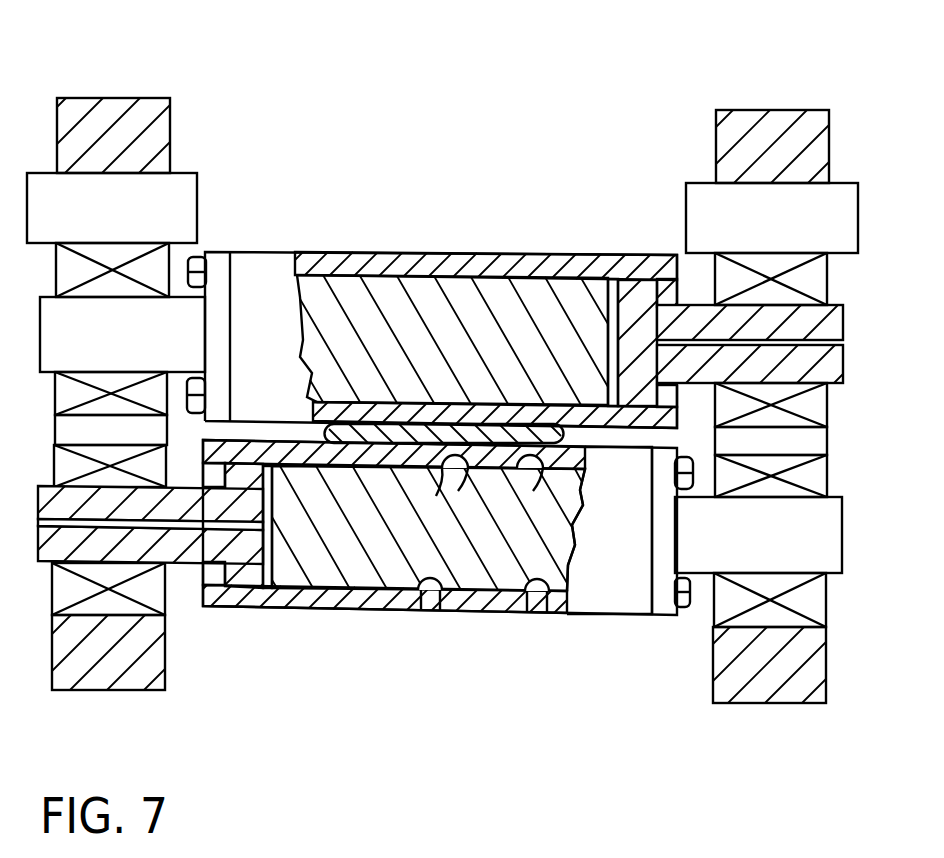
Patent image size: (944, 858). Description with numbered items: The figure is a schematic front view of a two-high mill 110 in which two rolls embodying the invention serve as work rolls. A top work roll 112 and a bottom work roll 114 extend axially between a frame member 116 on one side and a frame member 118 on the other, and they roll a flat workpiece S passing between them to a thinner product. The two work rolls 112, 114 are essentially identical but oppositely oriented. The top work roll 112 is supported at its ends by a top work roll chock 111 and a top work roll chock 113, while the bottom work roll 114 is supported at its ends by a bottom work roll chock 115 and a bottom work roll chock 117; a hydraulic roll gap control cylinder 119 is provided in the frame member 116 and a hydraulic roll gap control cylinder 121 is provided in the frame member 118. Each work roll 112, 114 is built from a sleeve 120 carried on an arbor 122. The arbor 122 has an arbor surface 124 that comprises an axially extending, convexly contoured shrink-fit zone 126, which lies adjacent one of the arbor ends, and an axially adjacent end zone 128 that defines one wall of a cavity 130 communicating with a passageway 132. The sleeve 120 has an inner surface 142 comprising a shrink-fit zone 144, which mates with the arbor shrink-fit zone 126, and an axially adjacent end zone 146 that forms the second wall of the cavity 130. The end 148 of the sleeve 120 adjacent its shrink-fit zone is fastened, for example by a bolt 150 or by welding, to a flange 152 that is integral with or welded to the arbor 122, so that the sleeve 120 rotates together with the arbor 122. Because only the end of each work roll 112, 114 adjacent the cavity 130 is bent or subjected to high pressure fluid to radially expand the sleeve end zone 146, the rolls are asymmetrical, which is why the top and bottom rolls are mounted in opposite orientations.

The 2-high mill 110 is at (132, 87).
The top work roll chock 111 is at (150, 273).
The top work roll 112 is at (447, 252).
The top work roll chock 113 is at (812, 277).
The bottom work roll 114 is at (400, 613).
The bottom work roll chock 115 is at (115, 605).
The frame member 116 is at (155, 137).
The bottom work roll chock 117 is at (760, 620).
The frame member 118 is at (732, 135).
The hydraulic roll gap control cylinder 119 is at (180, 210).
The sleeve 120 is at (590, 614).
The hydraulic roll gap control cylinder 121 is at (698, 212).
The arbor 122 is at (700, 576).
The arbor surface 124 is at (435, 612).
The shrink-fit zone 126 is at (522, 613).
The end zone 128 is at (273, 540).
The cavity 130 is at (237, 590).
The passageway 132 is at (233, 548).
The inner surface 142 is at (519, 478).
The shrink-fit zone 144 is at (445, 476).
The end zone 146 is at (303, 464).
The end of the sleeve 148 is at (580, 520).
The bolt 150 is at (693, 462).
The flange 152 is at (678, 514).
The flat workpiece S is at (553, 455).